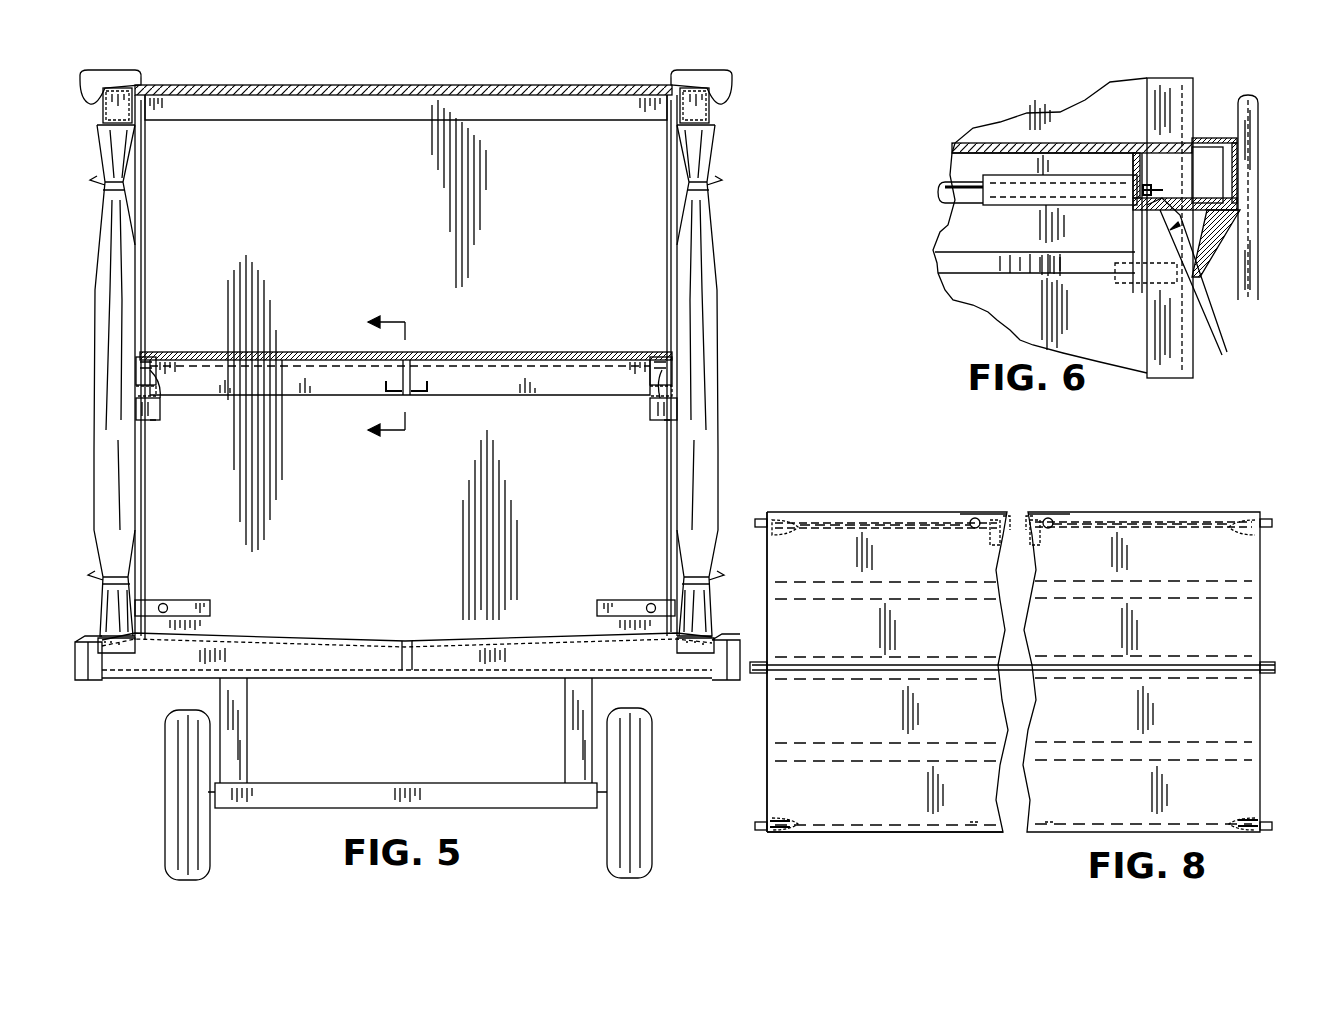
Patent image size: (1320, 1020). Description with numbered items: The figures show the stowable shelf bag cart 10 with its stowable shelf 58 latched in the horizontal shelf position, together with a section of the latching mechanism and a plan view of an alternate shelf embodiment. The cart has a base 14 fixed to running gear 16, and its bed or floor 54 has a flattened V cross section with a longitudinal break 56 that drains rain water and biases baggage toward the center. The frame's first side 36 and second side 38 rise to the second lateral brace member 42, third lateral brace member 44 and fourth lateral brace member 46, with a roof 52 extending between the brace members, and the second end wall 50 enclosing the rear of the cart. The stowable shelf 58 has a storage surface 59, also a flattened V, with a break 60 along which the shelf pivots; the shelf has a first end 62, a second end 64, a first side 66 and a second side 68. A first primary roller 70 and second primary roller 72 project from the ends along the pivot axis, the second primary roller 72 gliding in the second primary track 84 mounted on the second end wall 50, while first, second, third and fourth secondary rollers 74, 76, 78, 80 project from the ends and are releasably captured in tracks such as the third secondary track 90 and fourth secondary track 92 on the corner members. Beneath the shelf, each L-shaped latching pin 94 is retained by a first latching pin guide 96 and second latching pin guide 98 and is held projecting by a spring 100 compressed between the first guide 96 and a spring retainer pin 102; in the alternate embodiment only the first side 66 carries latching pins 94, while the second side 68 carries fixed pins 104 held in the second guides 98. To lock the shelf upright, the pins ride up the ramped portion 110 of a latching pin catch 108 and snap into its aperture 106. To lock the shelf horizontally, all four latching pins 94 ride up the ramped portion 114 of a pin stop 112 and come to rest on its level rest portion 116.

In FIG. 5, the stowable shelf bag cart 10 is at (735, 218).
In FIG. 5, the base 14 is at (95, 636).
In FIG. 5, the running gear 16 is at (215, 697).
In FIG. 5, the first side 36 is at (96, 352).
In FIG. 5, the second side 38 is at (735, 368).
In FIG. 5, the second lateral brace member 42 is at (100, 108).
In FIG. 5, the third lateral brace member 44 is at (508, 103).
In FIG. 5, the fourth lateral brace member 46 is at (720, 108).
In FIG. 5, the second end wall 50 is at (384, 209).
In FIG. 6, the second end wall 50 is at (1252, 115).
In FIG. 5, the roof 52 is at (382, 85).
In FIG. 5, the floor 54 is at (325, 634).
In FIG. 5, the break 56 is at (407, 680).
In FIG. 5, the stowable shelf 58 is at (290, 350).
In FIG. 8, the stowable shelf 58 is at (1078, 508).
In FIG. 5, the storage surface 59 is at (480, 354).
In FIG. 6, the storage surface 59 is at (1030, 143).
In FIG. 8, the storage surface 59 is at (927, 639).
In FIG. 5, the break 60 is at (412, 395).
In FIG. 8, the break 60 is at (1180, 665).
In FIG. 8, the first end 62 is at (760, 762).
In FIG. 8, the second end 64 is at (1262, 695).
In FIG. 5, the first side 66 is at (162, 354).
In FIG. 8, the first side 66 is at (1000, 508).
In FIG. 5, the second side 68 is at (652, 352).
In FIG. 8, the second side 68 is at (935, 836).
In FIG. 8, the first primary roller 70 is at (755, 674).
In FIG. 5, the second primary roller 72 is at (410, 360).
In FIG. 6, the second primary roller 72 is at (1200, 147).
In FIG. 8, the second primary roller 72 is at (1270, 662).
In FIG. 8, the first secondary roller 74 is at (760, 519).
In FIG. 8, the second secondary roller 76 is at (757, 826).
In FIG. 5, the third secondary roller 78 is at (138, 392).
In FIG. 6, the third secondary roller 78 is at (1142, 295).
In FIG. 8, the third secondary roller 78 is at (1268, 519).
In FIG. 5, the fourth secondary roller 80 is at (680, 385).
In FIG. 8, the fourth secondary roller 80 is at (1272, 828).
In FIG. 6, the second primary track 84 is at (1222, 138).
In FIG. 5, the third secondary track 90 is at (135, 242).
In FIG. 6, the third secondary track 90 is at (1170, 78).
In FIG. 5, the fourth secondary track 92 is at (680, 302).
In FIG. 5, the latching pin 94 is at (164, 380).
In FIG. 6, the latching pin 94 is at (945, 200).
In FIG. 8, the latching pin 94 is at (882, 522).
In FIG. 5, the first latching pin guide 96 is at (135, 368).
In FIG. 8, the first latching pin guide 96 is at (977, 830).
In FIG. 6, the second latching pin guide 98 is at (1010, 207).
In FIG. 8, the second latching pin guide 98 is at (782, 518).
In FIG. 8, the spring 100 is at (977, 517).
In FIG. 8, the spring retainer pin 102 is at (985, 518).
In FIG. 8, the fixed pin 104 is at (766, 824).
In FIG. 5, the aperture 106 is at (164, 603).
In FIG. 5, the latching pin catch 108 is at (190, 600).
In FIG. 5, the ramped portion 110 is at (210, 618).
In FIG. 5, the pin stop 112 is at (154, 424).
In FIG. 6, the pin stop 112 is at (1250, 221).
In FIG. 5, the ramped portion 114 is at (140, 417).
In FIG. 6, the ramped portion 114 is at (1208, 318).
In FIG. 6, the rest portion 116 is at (1168, 187).